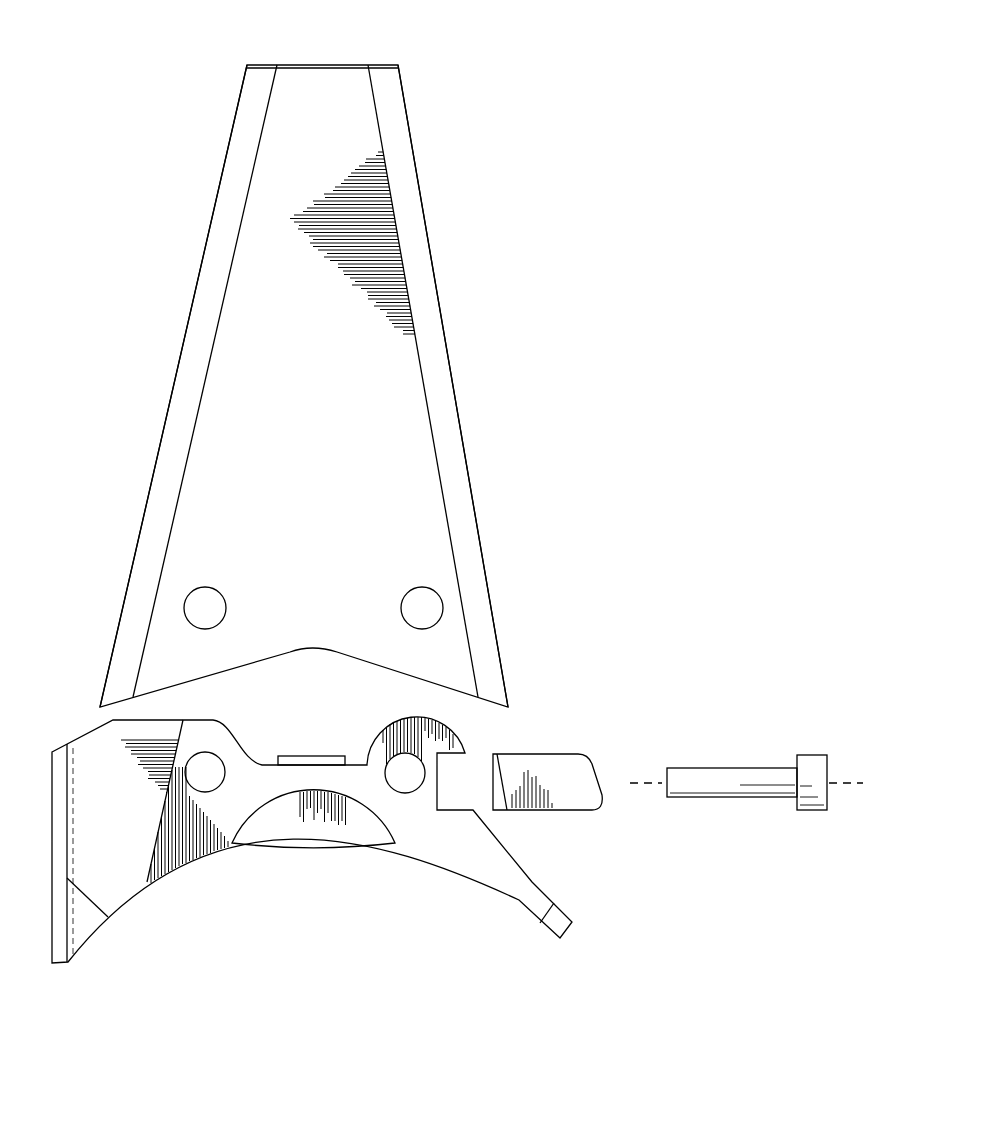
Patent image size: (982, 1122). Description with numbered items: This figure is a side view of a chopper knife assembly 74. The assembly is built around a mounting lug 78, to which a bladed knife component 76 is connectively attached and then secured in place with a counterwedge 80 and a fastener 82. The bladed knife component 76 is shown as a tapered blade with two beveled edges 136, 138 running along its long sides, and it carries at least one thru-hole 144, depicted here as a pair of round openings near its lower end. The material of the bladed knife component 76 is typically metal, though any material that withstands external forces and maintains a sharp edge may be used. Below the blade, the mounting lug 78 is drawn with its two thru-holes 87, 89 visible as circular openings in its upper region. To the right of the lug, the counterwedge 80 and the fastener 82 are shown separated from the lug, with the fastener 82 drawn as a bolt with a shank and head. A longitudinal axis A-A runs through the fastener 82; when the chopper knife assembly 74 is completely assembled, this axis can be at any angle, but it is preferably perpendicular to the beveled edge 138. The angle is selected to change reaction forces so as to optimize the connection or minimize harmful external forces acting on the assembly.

The chopper knife assembly 74 is at (602, 165).
The bladed knife component 76 is at (335, 93).
The mounting lug 78 is at (192, 850).
The counterwedge 80 is at (567, 768).
The fastener 82 is at (725, 775).
The thru-hole 87 is at (392, 755).
The thru-hole 89 is at (205, 752).
The beveled edge 136 is at (187, 328).
The beveled edge 138 is at (447, 345).
The thru-hole 144 is at (213, 590).